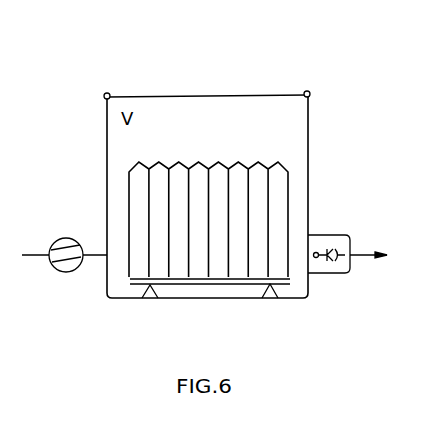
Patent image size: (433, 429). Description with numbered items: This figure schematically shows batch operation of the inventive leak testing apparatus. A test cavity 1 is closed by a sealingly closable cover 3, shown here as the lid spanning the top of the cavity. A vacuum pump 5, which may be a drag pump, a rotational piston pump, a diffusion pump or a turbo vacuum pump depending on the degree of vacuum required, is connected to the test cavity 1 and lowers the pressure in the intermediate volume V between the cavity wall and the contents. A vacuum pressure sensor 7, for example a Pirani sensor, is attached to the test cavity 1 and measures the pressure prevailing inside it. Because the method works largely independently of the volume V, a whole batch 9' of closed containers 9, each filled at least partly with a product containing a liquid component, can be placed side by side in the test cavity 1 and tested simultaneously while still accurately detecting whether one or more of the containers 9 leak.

The test cavity 1 is at (312, 123).
The cover 3 is at (205, 94).
The vacuum pump 5 is at (67, 273).
The vacuum pressure sensor 7 is at (334, 233).
The closed container 9 is at (218, 195).
The batch of containers 9' is at (106, 219).